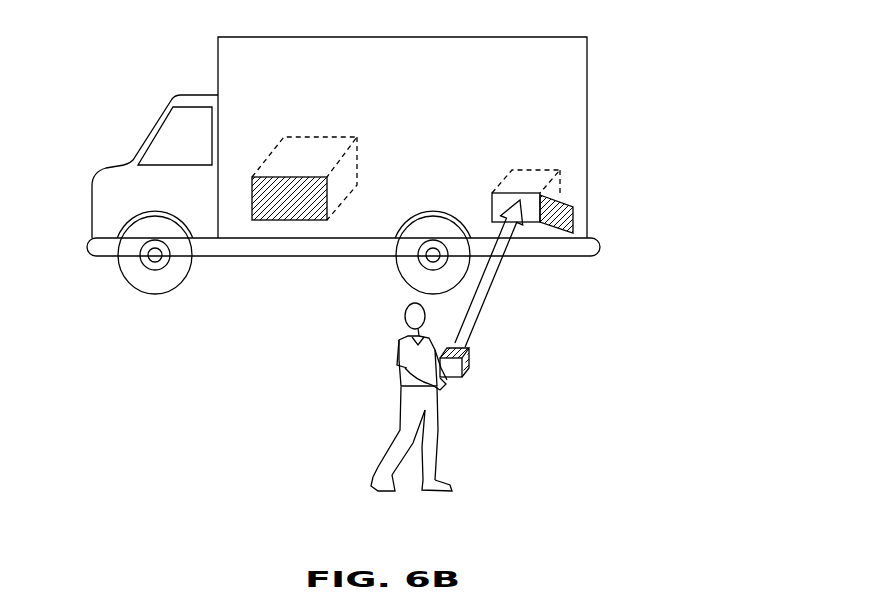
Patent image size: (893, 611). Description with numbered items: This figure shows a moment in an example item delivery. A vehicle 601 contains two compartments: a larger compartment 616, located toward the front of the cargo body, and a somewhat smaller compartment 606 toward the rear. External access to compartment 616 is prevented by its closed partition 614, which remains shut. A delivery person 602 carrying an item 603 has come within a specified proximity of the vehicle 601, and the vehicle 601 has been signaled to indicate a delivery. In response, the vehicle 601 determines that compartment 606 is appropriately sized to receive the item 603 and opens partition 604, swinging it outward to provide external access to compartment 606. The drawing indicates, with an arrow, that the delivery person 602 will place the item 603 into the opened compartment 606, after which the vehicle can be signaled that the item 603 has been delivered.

The vehicle 601 is at (155, 128).
The delivery person 602 is at (402, 343).
The item 603 is at (470, 370).
The partition 604 is at (567, 233).
The compartment 606 is at (528, 185).
The partition 614 is at (263, 218).
The compartment 616 is at (313, 152).